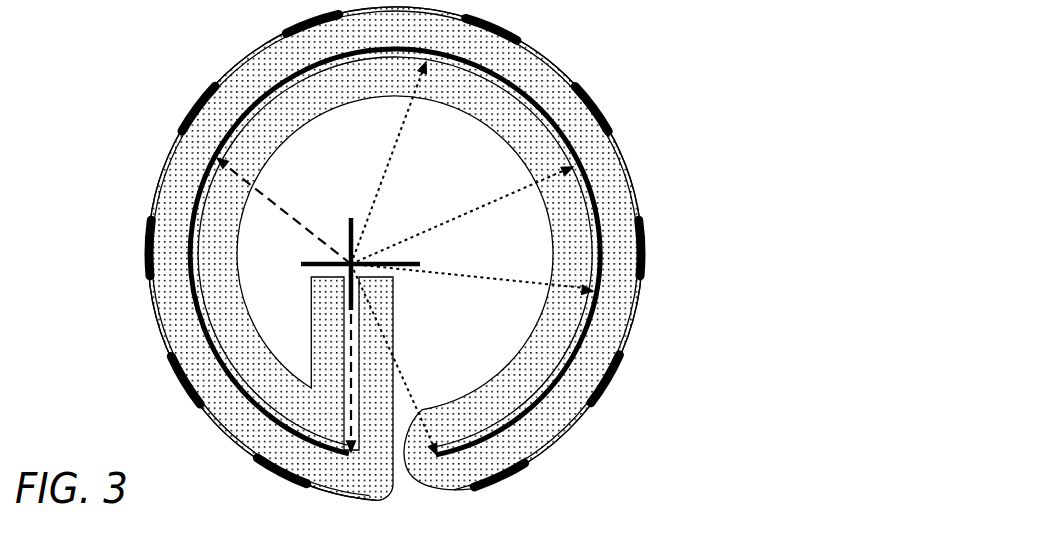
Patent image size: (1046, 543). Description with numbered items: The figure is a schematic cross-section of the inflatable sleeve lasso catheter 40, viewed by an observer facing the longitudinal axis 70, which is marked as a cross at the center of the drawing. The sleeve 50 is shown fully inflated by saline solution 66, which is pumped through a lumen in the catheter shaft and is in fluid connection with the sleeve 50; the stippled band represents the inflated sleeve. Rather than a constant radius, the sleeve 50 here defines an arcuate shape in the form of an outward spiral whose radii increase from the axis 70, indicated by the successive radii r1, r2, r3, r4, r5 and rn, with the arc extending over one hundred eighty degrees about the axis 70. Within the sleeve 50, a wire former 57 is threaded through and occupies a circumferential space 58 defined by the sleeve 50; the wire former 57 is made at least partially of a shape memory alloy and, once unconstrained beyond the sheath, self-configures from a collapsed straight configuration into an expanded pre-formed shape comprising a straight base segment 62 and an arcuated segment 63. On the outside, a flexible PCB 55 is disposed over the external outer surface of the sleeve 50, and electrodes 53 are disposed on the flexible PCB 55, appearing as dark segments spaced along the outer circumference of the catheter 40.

The inflatable sleeve lasso catheter 40 is at (414, 275).
The sleeve 50 is at (634, 177).
The electrodes 53 is at (186, 103).
The flexible PCB 55 is at (153, 318).
The wire former 57 is at (592, 300).
The circumferential space 58 is at (585, 159).
The straight base segment 62 is at (413, 348).
The arcuated segment 63 is at (415, 132).
The saline solution 66 is at (559, 427).
The longitudinal axis 70 is at (360, 280).
The first radius r1 is at (352, 333).
The second radius r2 is at (311, 225).
The third radius r3 is at (402, 132).
The fourth radius r4 is at (478, 198).
The fifth radius r5 is at (508, 270).
The nth radius rn is at (400, 367).